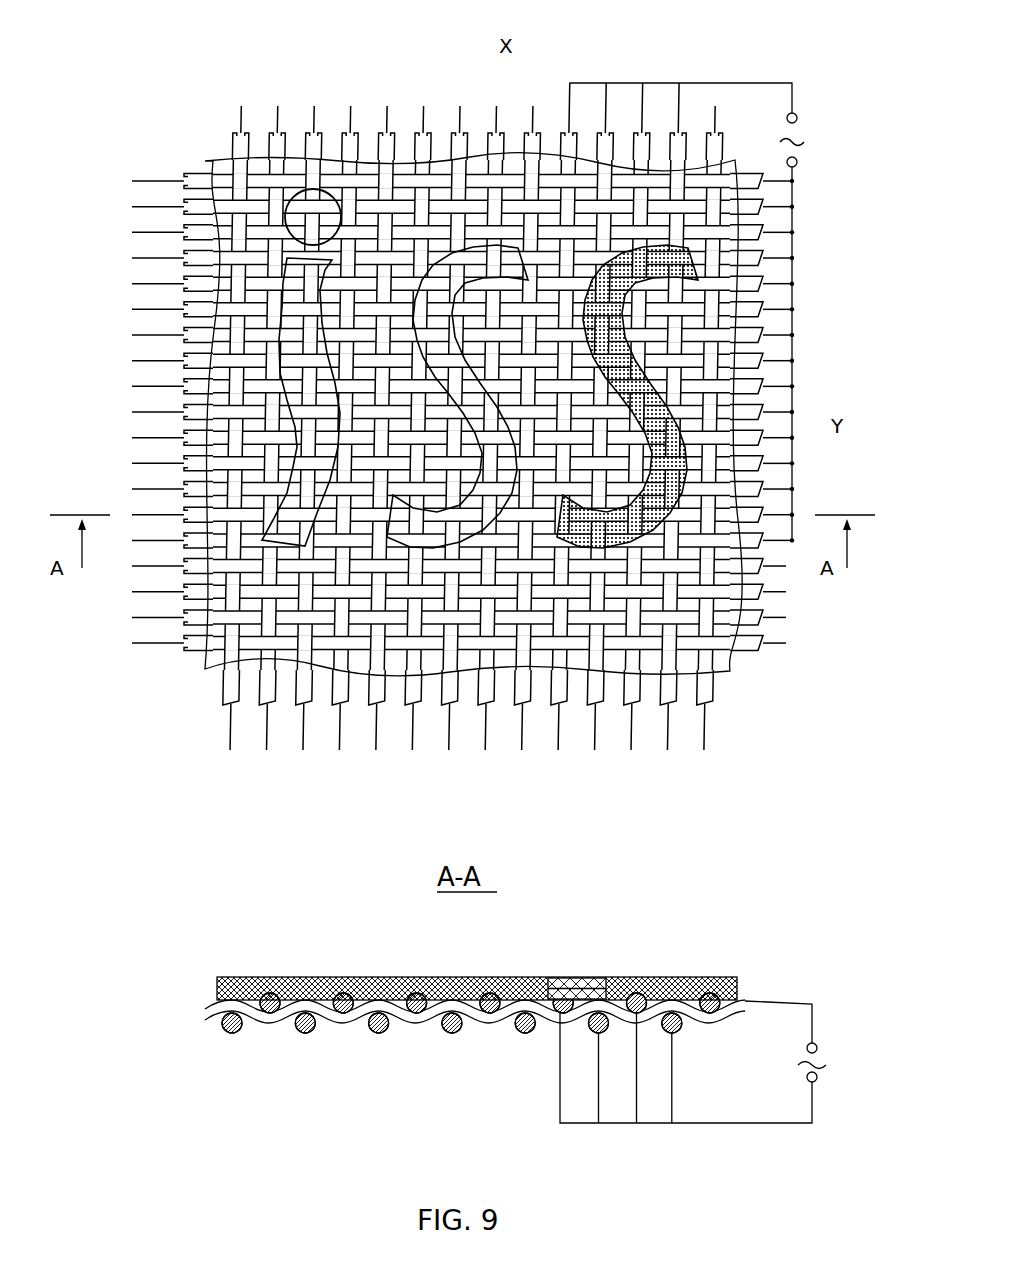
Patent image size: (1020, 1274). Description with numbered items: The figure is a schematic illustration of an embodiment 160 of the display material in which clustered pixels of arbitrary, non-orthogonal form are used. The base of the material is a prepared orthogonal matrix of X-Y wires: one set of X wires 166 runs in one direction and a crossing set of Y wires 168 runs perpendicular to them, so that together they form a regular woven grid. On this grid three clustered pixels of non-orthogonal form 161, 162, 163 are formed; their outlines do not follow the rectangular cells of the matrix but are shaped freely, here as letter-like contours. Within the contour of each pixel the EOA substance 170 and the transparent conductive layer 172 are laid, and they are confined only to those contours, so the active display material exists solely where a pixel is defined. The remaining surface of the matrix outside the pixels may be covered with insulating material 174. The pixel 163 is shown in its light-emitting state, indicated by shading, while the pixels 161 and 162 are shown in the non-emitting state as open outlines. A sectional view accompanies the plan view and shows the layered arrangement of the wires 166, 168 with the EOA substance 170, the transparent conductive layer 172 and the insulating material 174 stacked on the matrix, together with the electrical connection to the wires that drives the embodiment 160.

The embodiment of the display material 160 is at (830, 102).
The clustered pixel of non-orthogonal form 161 is at (278, 548).
The clustered pixel of non-orthogonal form 162 is at (390, 537).
The clustered pixel of non-orthogonal form 163 is at (563, 528).
The X wires 166 is at (424, 150).
The Y wires 168 is at (186, 286).
The EOA substance 170 is at (652, 992).
The transparent conductive layer 172 is at (573, 985).
The insulating material 174 is at (352, 982).